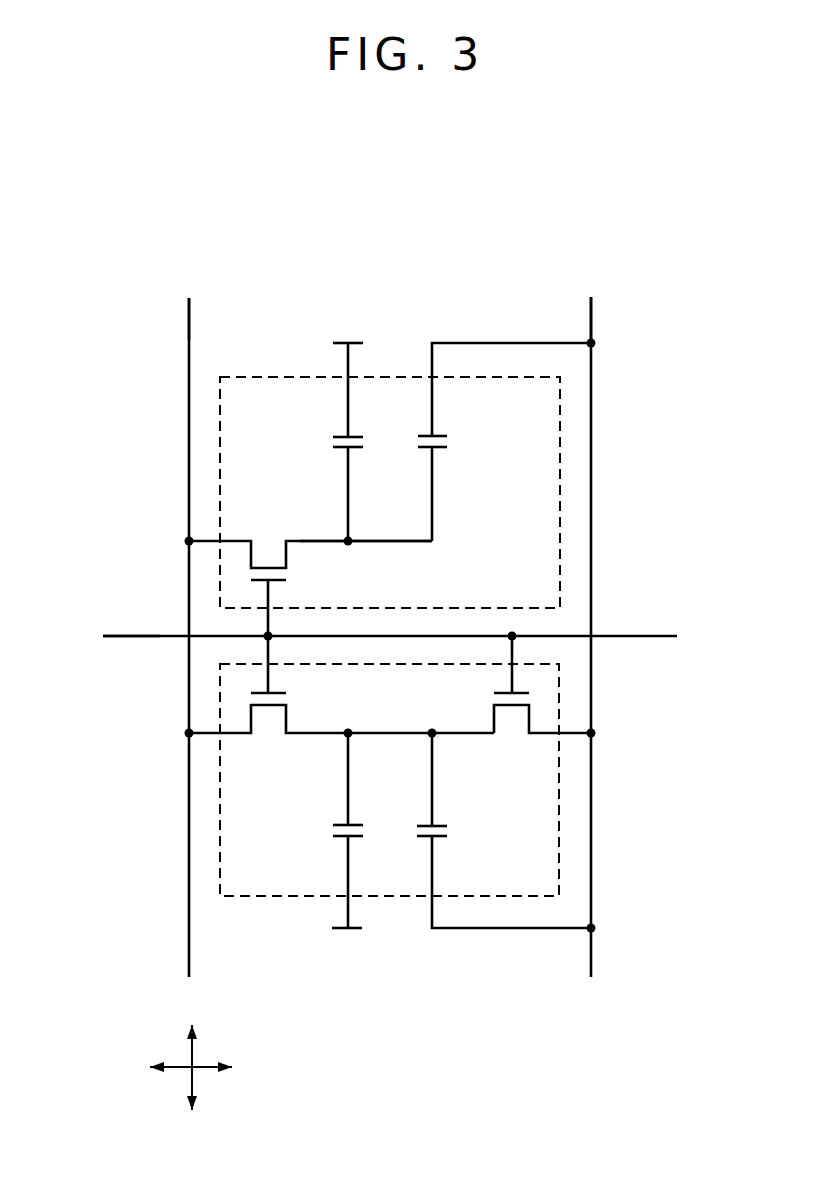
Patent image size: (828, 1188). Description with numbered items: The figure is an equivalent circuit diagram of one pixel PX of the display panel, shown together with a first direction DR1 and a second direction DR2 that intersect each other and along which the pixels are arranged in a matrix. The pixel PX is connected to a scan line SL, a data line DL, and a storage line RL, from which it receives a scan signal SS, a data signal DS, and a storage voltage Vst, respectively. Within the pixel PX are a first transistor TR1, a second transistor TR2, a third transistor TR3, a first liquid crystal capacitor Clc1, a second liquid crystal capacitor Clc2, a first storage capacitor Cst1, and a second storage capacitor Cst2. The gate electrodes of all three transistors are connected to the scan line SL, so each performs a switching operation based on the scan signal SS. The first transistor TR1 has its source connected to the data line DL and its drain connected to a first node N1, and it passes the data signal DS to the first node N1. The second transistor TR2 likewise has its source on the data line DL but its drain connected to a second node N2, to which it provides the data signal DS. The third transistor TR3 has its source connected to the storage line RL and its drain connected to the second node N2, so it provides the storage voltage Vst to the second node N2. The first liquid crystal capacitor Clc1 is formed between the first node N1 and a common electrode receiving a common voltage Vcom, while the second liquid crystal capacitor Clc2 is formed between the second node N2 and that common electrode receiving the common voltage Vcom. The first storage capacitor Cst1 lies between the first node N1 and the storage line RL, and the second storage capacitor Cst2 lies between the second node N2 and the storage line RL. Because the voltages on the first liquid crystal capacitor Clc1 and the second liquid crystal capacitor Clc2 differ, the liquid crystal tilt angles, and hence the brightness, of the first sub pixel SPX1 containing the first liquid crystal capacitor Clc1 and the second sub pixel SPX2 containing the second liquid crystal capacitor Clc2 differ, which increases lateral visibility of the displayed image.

The pixel PX is at (461, 253).
The data line DL is at (189, 318).
The data signal DS is at (191, 303).
The storage line RL is at (591, 318).
The storage voltage Vst is at (590, 303).
The scan line SL is at (139, 639).
The scan signal SS is at (112, 638).
The first sub pixel SPX1 is at (560, 492).
The second sub pixel SPX2 is at (559, 778).
The common voltage Vcom is at (351, 640).
The first liquid crystal capacitor Clc1 is at (319, 485).
The first storage capacitor Cst1 is at (507, 440).
The first transistor TR1 is at (309, 577).
The first node N1 is at (366, 554).
The second transistor TR2 is at (267, 699).
The second node N2 is at (419, 719).
The third transistor TR3 is at (544, 697).
The second liquid crystal capacitor Clc2 is at (317, 788).
The second storage capacitor Cst2 is at (506, 833).
The first direction DR1 is at (217, 1069).
The second direction DR2 is at (194, 1084).